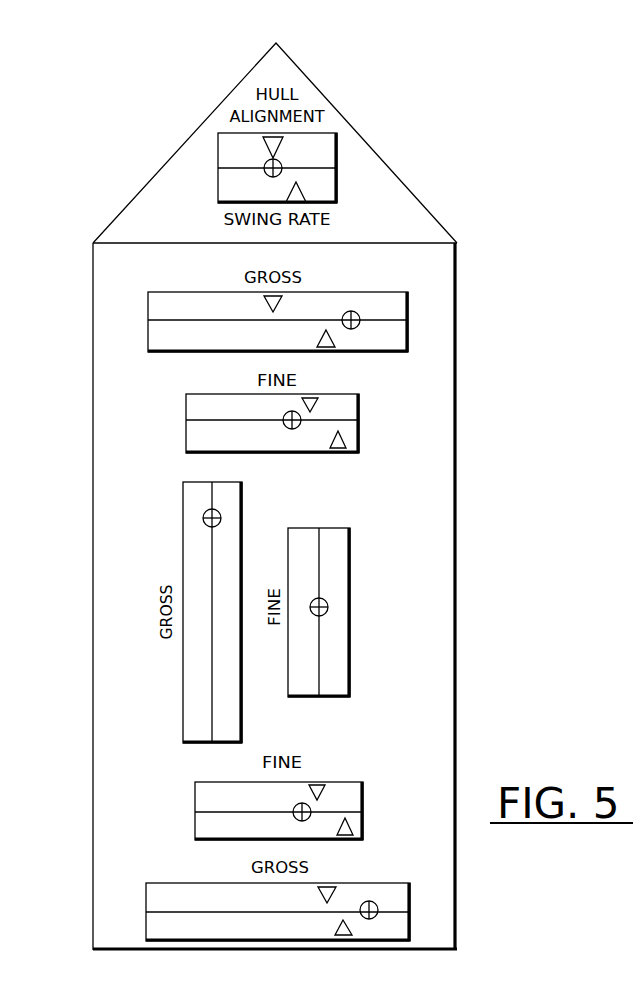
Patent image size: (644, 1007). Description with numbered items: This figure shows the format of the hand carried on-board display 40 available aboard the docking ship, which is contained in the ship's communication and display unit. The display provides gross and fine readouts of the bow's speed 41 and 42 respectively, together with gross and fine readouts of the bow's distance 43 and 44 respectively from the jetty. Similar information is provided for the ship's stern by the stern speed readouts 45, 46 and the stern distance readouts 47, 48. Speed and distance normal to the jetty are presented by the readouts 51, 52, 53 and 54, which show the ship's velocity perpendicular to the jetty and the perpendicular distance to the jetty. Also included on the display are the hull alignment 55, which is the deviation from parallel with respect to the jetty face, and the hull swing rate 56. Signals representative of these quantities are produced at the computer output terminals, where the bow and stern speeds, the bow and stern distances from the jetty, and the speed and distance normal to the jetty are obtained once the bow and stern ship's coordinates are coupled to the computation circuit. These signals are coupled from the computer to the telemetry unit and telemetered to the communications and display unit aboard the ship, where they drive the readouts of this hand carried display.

The control panel 40 is at (97, 164).
The gross readout of the bow's speed 41 is at (410, 306).
The fine readout of the bow's speed 42 is at (362, 406).
The gross readout of the bow's distance 43 is at (410, 338).
The fine readout of the bow's distance 44 is at (362, 438).
The stern speed readout 45 is at (365, 792).
The stern speed readout 46 is at (412, 897).
The stern distance readout 47 is at (365, 826).
The stern distance readout 48 is at (412, 923).
The speed normal to the jetty readout 51 is at (182, 490).
The speed normal to the jetty readout 52 is at (304, 527).
The distance normal to the jetty readout 53 is at (248, 602).
The distance normal to the jetty readout 54 is at (335, 527).
The hull alignment 55 is at (338, 154).
The hull swing rate 56 is at (217, 193).